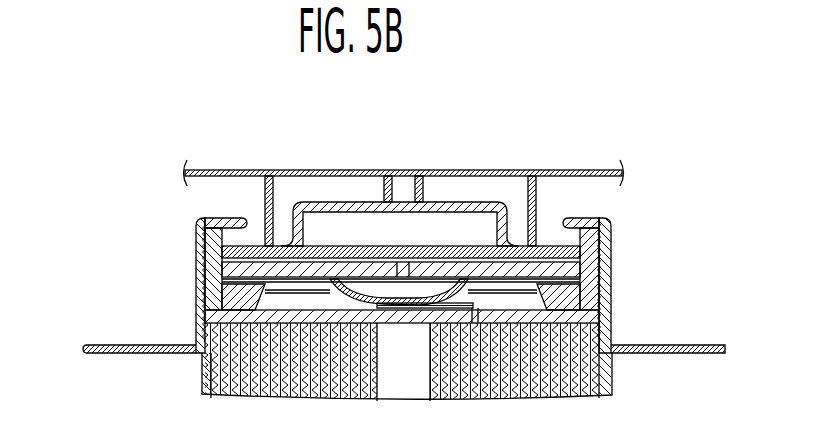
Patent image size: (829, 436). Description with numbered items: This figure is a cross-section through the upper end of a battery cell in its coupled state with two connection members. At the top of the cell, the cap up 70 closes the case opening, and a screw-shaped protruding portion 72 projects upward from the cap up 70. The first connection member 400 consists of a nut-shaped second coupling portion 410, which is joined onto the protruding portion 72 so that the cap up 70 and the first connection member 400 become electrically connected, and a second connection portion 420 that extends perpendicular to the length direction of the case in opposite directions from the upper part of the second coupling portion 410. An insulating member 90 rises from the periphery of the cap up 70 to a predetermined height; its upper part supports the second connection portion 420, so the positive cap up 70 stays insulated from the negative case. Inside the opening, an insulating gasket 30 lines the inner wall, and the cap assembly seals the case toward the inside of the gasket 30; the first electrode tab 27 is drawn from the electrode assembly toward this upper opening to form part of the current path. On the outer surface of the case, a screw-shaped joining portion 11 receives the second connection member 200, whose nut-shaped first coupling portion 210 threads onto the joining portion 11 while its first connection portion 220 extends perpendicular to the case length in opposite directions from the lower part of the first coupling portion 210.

The cap up 70 is at (321, 204).
The protruding portion 72 is at (396, 206).
The insulating member 90 is at (265, 198).
The first connection member 400 is at (561, 106).
The second coupling portion 410 is at (440, 170).
The second connection portion 420 is at (540, 170).
The gasket 30 is at (612, 223).
The joining portion 11 is at (603, 247).
The first electrode tab 27 is at (492, 303).
The second connection member 200 is at (680, 283).
The first coupling portion 210 is at (601, 292).
The first connection portion 220 is at (627, 345).